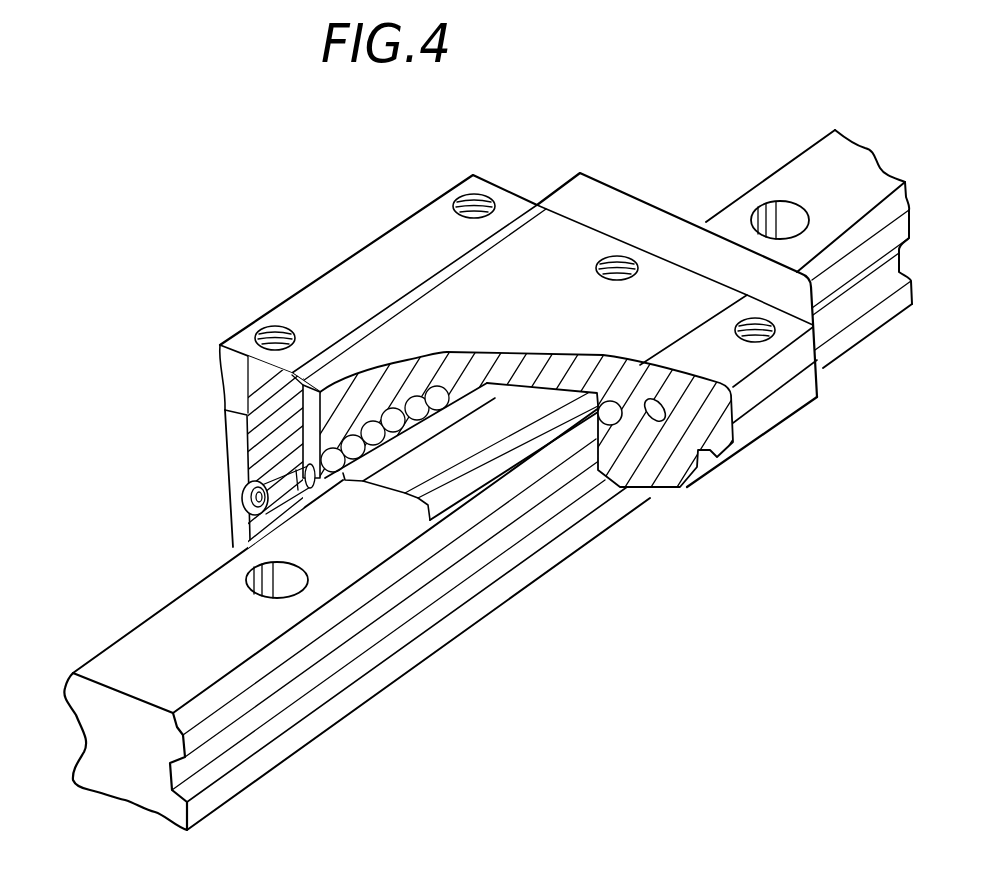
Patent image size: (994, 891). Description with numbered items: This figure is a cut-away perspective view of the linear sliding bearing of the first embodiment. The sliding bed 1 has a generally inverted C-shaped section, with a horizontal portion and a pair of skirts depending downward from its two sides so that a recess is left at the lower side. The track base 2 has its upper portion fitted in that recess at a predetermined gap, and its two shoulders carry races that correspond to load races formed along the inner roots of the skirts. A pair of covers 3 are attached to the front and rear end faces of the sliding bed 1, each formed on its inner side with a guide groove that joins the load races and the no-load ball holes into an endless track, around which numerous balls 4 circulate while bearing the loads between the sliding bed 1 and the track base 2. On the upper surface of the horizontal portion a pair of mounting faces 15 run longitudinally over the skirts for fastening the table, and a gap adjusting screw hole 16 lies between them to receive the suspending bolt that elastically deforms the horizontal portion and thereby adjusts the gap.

The sliding bed 1 is at (344, 252).
The track base 2 is at (134, 816).
The cover 3 is at (572, 172).
The ball 4 is at (315, 463).
The mounting face 15 is at (418, 233).
The gap adjusting screw hole 16 is at (622, 262).